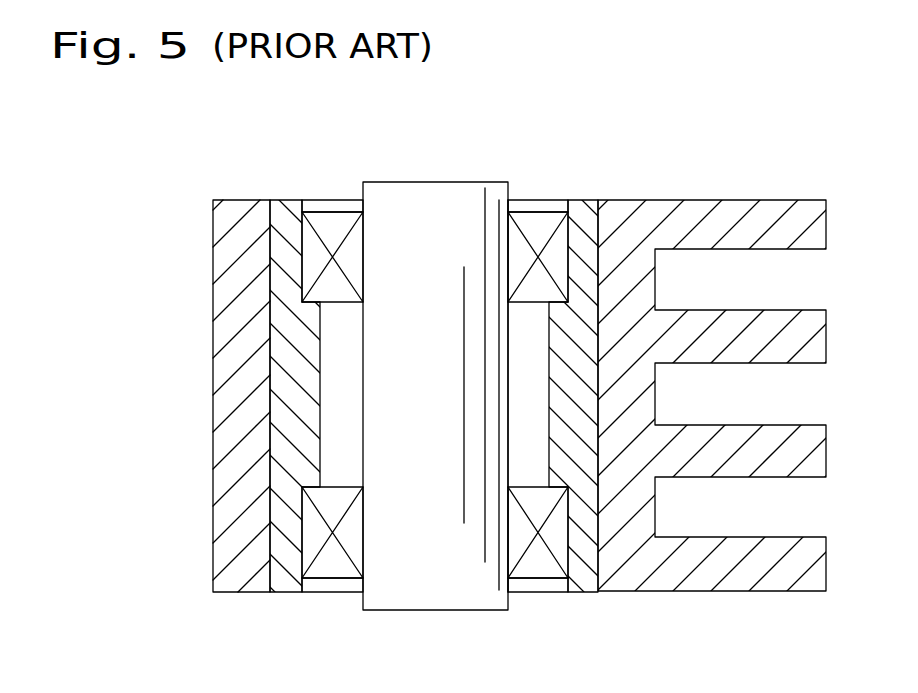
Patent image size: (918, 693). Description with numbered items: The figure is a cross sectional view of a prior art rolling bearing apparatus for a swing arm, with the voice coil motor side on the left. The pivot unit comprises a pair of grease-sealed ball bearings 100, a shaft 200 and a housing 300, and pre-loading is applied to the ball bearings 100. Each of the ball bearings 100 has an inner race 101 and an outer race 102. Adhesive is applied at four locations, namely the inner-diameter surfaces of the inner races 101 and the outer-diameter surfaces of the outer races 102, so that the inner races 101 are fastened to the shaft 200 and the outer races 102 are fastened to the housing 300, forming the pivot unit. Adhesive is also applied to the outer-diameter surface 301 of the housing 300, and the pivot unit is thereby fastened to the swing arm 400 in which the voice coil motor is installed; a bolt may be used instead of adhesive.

The grease-sealed ball bearing 100 is at (538, 230).
The inner race 101 is at (507, 267).
The outer race 102 is at (573, 250).
The shaft 200 is at (423, 195).
The housing 300 is at (285, 212).
The outer-diameter surface 301 is at (264, 268).
The swing arm 400 is at (742, 210).